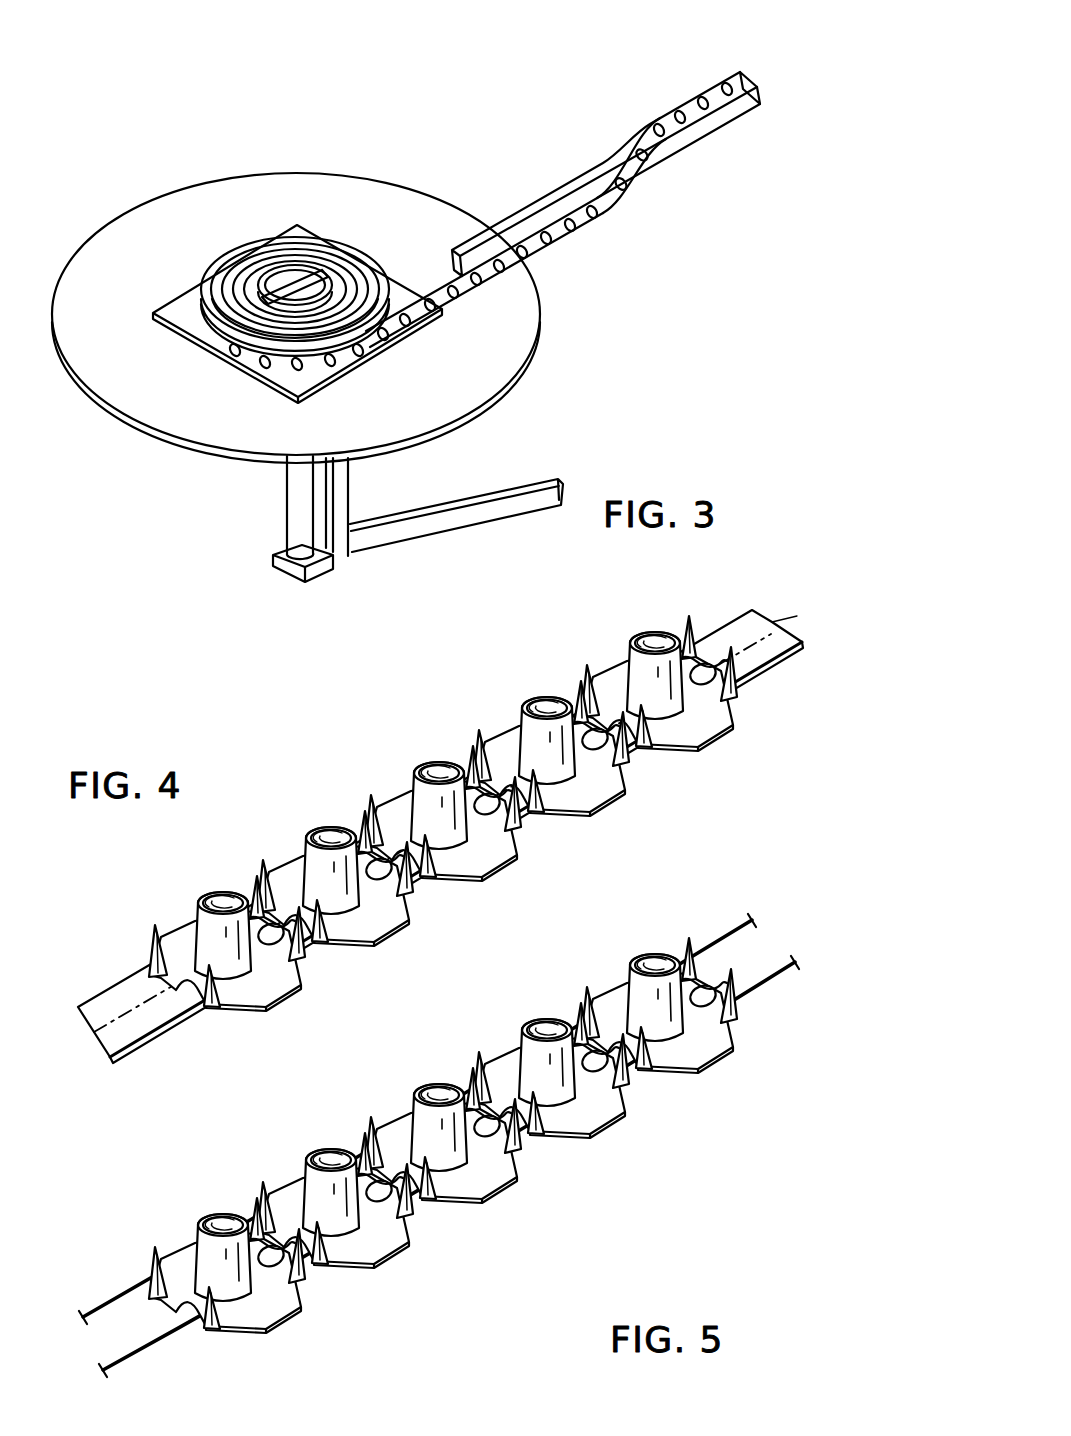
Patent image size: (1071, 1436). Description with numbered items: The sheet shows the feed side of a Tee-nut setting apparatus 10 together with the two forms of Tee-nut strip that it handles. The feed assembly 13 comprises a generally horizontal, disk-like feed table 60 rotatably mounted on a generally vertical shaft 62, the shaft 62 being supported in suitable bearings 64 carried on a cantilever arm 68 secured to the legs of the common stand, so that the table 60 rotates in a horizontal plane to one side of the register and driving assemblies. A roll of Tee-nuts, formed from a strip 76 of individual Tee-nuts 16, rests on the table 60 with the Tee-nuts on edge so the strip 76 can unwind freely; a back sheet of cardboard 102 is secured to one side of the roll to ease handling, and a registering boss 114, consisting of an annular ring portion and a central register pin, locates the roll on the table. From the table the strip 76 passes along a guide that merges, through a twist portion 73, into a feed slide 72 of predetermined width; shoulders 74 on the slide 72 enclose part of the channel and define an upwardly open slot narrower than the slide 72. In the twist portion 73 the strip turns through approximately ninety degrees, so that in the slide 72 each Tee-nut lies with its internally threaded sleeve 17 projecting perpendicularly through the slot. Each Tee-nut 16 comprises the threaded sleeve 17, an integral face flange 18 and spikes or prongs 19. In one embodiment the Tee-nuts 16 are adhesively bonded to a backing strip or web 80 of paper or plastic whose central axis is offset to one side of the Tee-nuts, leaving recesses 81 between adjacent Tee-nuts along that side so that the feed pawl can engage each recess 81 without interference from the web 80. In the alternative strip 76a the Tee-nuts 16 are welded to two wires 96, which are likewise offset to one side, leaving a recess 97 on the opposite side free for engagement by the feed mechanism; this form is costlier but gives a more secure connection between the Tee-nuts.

In FIG. 3, the Tee-nut setting apparatus 10 is at (462, 257).
In FIG. 3, the feed assembly 13 is at (420, 140).
In FIG. 4, the Tee-nut 16 is at (408, 777).
In FIG. 5, the Tee-nut 16 is at (540, 1003).
In FIG. 4, the internally threaded sleeve 17 is at (533, 696).
In FIG. 5, the internally threaded sleeve 17 is at (421, 1099).
In FIG. 4, the face flange 18 is at (672, 740).
In FIG. 5, the face flange 18 is at (657, 1059).
In FIG. 4, the spikes or prongs 19 is at (448, 739).
In FIG. 5, the spikes or prongs 19 is at (345, 1131).
In FIG. 3, the feed table 60 is at (218, 230).
In FIG. 3, the shaft 62 is at (295, 493).
In FIG. 3, the bearings 64 is at (283, 566).
In FIG. 3, the cantilever arm 68 is at (520, 505).
In FIG. 3, the feed slide 72 is at (732, 72).
In FIG. 3, the twist portion 73 is at (652, 203).
In FIG. 3, the shoulders 74 is at (687, 98).
In FIG. 3, the strip of Tee-nuts 76 is at (410, 343).
In FIG. 4, the strip of Tee-nuts 76 is at (258, 832).
In FIG. 5, the Tee-nut strip 76a is at (458, 1057).
In FIG. 4, the backing strip or web 80 is at (152, 1023).
In FIG. 4, the recesses 81 is at (317, 947).
In FIG. 5, the wires 96 is at (783, 977).
In FIG. 5, the recess 97 is at (410, 1148).
In FIG. 3, the back sheet of cardboard 102 is at (185, 300).
In FIG. 3, the registering boss 114 is at (298, 277).